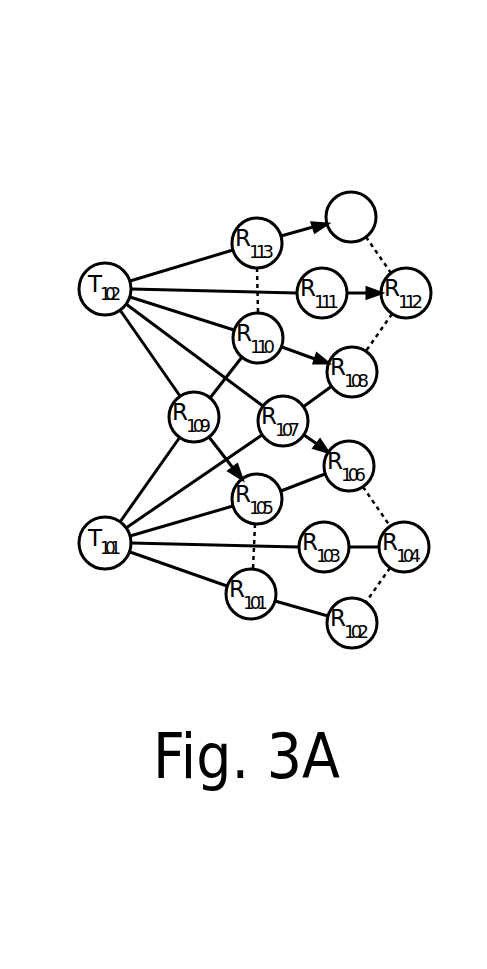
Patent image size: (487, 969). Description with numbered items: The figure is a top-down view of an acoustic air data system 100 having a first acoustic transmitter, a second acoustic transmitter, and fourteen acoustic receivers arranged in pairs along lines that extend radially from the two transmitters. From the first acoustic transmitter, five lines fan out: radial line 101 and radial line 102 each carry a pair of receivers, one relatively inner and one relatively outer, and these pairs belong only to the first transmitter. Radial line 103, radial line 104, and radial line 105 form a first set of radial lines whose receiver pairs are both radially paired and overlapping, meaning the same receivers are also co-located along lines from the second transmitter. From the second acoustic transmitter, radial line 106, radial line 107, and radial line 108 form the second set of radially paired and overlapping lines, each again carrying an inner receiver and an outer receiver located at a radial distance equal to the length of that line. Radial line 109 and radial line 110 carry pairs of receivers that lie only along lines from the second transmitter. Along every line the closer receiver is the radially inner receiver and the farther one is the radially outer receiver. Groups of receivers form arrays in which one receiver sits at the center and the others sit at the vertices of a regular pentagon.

The acoustic air data system 100 is at (352, 115).
The radial line 101 is at (153, 560).
The radial line 102 is at (185, 545).
The radial line 103 is at (212, 510).
The radial line 104 is at (183, 490).
The radial line 105 is at (170, 452).
The radial line 106 is at (140, 338).
The radial line 107 is at (185, 352).
The radial line 108 is at (177, 310).
The radial line 109 is at (190, 289).
The radial line 110 is at (215, 254).